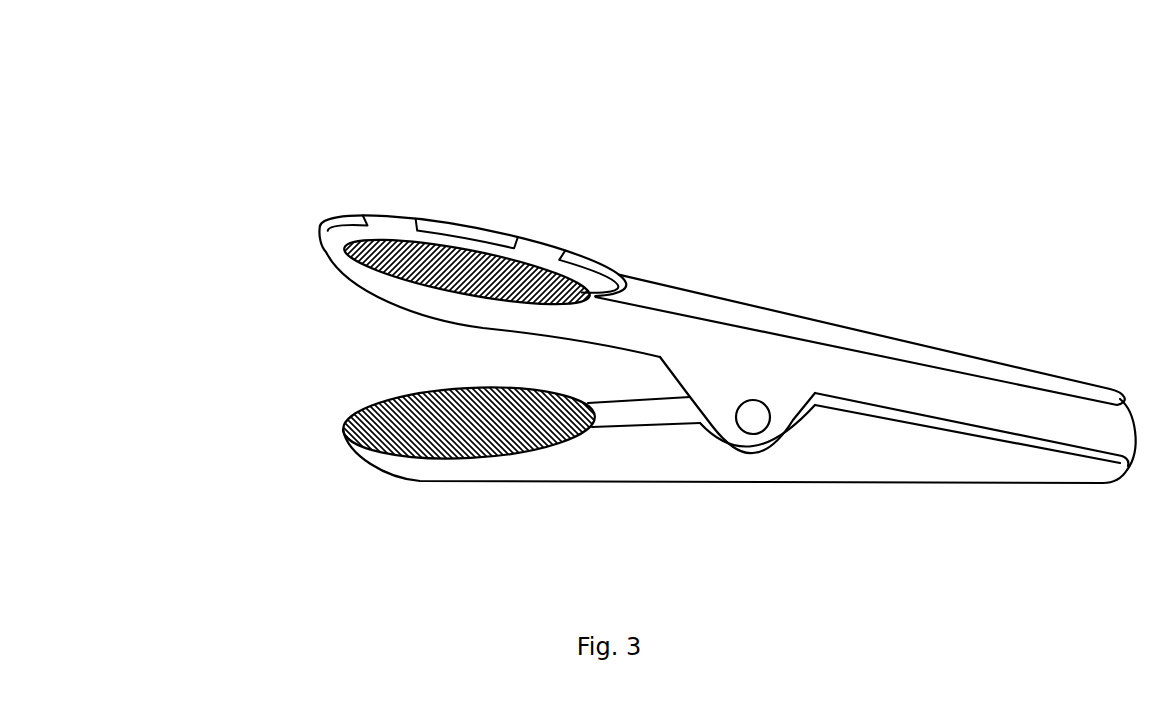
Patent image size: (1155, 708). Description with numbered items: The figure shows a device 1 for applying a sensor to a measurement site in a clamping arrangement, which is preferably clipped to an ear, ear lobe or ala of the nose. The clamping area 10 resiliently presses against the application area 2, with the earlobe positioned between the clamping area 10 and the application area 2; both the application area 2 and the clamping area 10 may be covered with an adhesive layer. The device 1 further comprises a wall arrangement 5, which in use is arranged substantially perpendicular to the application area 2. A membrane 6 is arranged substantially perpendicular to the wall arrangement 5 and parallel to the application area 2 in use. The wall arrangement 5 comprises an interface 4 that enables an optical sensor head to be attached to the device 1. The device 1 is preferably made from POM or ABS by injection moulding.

The device 1 is at (498, 48).
The application area 2 is at (335, 282).
The interface 4 is at (467, 228).
The wall arrangement 5 is at (540, 247).
The membrane 6 is at (382, 245).
The clamping area 10 is at (378, 428).